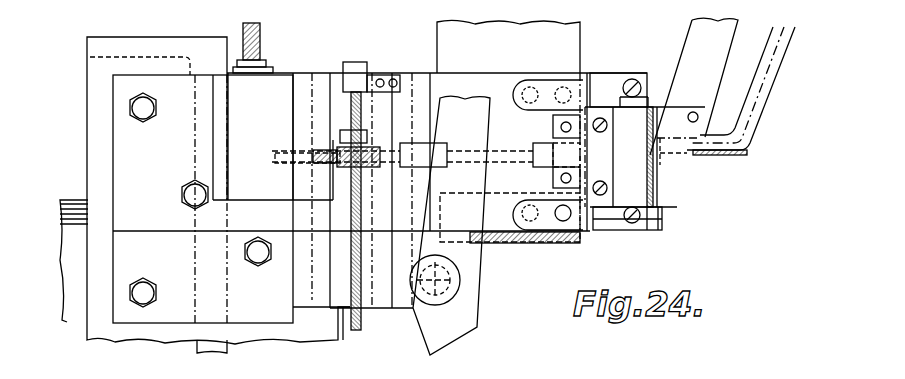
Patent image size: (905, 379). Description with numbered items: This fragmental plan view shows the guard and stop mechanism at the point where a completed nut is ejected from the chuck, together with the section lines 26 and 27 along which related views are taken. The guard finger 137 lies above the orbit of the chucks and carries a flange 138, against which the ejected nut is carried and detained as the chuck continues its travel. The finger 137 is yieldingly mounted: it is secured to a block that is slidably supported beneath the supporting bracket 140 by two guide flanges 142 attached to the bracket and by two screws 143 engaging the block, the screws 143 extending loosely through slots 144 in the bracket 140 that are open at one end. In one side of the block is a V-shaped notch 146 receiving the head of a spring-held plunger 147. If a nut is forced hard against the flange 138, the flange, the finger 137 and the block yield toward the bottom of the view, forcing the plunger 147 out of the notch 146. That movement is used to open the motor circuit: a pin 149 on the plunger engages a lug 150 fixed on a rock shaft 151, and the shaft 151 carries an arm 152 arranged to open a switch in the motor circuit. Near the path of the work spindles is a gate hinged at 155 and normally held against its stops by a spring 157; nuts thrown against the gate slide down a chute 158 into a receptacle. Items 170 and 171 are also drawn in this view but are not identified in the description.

The section line 26- 26 is at (500, 17).
The section line 27- 27 is at (805, 15).
The guard finger 137 is at (763, 98).
The flange 138 is at (773, 62).
The supporting bracket 140 is at (507, 80).
The guide flange 142 is at (633, 80).
The screw 143 is at (645, 80).
The slot 144 is at (645, 98).
The V-shaped notch 146 is at (583, 143).
The plunger 147 is at (540, 143).
The pin 149 is at (390, 150).
The lug 150 is at (342, 163).
The rock shaft 151 is at (350, 256).
The arm 152 is at (350, 120).
The hinge 155 is at (260, 111).
The spring 157 is at (520, 245).
The chute 158 is at (587, 66).
The lower arm end 170 is at (430, 337).
The ring 171 is at (450, 290).